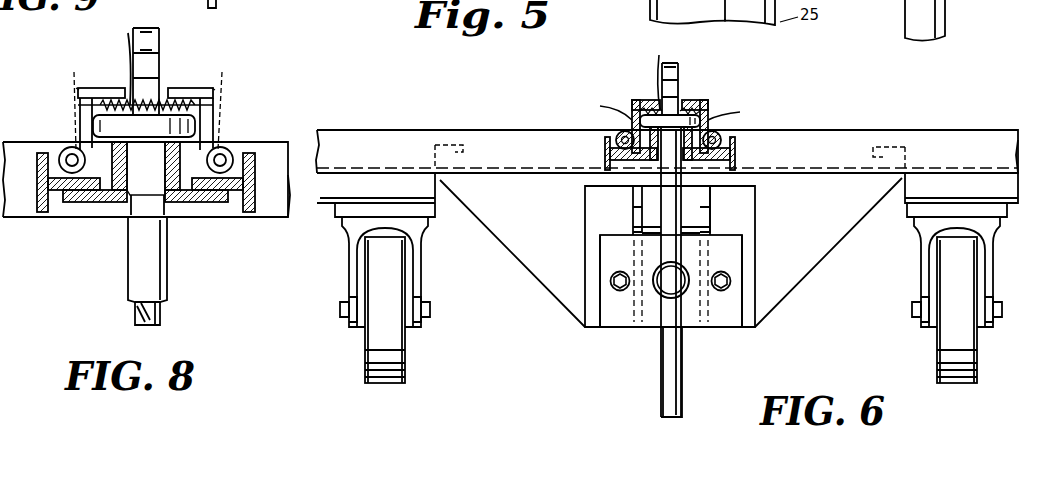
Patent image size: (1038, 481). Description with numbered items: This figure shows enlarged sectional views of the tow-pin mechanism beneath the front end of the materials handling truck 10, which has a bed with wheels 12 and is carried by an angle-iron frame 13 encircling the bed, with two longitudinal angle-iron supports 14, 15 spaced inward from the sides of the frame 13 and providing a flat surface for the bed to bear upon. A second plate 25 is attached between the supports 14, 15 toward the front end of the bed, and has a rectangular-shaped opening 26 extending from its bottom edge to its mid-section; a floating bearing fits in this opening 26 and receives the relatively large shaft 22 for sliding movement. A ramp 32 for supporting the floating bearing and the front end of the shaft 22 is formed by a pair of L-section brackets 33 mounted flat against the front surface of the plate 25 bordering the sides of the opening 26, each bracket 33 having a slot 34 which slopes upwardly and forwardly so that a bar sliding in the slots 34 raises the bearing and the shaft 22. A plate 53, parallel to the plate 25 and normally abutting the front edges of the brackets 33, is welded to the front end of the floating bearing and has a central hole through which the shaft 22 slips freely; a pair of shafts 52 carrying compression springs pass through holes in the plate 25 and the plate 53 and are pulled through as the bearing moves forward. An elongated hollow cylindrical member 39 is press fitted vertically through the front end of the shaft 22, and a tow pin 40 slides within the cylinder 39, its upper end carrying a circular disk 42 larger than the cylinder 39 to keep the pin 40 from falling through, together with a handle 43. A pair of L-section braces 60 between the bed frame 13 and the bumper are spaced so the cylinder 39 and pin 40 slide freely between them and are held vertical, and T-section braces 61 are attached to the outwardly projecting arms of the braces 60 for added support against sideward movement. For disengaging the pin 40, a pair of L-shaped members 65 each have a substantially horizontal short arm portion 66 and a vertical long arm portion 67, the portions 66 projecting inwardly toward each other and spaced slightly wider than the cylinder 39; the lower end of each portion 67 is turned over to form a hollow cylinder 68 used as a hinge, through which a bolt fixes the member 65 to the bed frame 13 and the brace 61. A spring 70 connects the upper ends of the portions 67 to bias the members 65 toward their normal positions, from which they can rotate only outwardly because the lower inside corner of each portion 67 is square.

In FIG. 8, the materials handling truck 10 is at (286, 130).
In FIG. 6, the materials handling truck 10 is at (983, 122).
In FIG. 6, the wheels 12 is at (398, 362).
In FIG. 8, the frame 13 is at (281, 218).
In FIG. 6, the frame 13 is at (924, 129).
In FIG. 6, the support 14 is at (890, 144).
In FIG. 6, the support 15 is at (450, 142).
In FIG. 6, the shaft 22 is at (660, 297).
In FIG. 6, the second plate 25 is at (520, 262).
In FIG. 6, the rectangular-shaped opening 26 is at (700, 228).
In FIG. 6, the ramp 32 is at (592, 330).
In FIG. 6, the brackets 33 is at (585, 208).
In FIG. 6, the slot 34 is at (633, 214).
In FIG. 8, the elongated hollow cylindrical member 39 is at (168, 276).
In FIG. 6, the elongated hollow cylindrical member 39 is at (665, 238).
In FIG. 8, the tow pin 40 is at (161, 316).
In FIG. 6, the tow pin 40 is at (684, 374).
In FIG. 8, the circular disk 42 is at (150, 113).
In FIG. 6, the circular disk 42 is at (684, 113).
In FIG. 8, the handle 43 is at (160, 56).
In FIG. 6, the handle 43 is at (680, 78).
In FIG. 6, the shafts 52 is at (610, 282).
In FIG. 6, the plate 53 is at (742, 250).
In FIG. 8, the braces 60 is at (96, 204).
In FIG. 6, the braces 60 is at (670, 172).
In FIG. 8, the braces 61 is at (43, 216).
In FIG. 6, the braces 61 is at (604, 151).
In FIG. 8, the members 65 is at (84, 86).
In FIG. 6, the members 65 is at (631, 99).
In FIG. 8, the short arm portion 66 is at (112, 87).
In FIG. 6, the short arm portion 66 is at (638, 99).
In FIG. 8, the long arm portion 67 is at (70, 108).
In FIG. 6, the long arm portion 67 is at (673, 109).
In FIG. 8, the hollow cylinder 68 is at (63, 150).
In FIG. 6, the hollow cylinder 68 is at (616, 137).
In FIG. 8, the spring 70 is at (118, 58).
In FIG. 6, the spring 70 is at (659, 73).